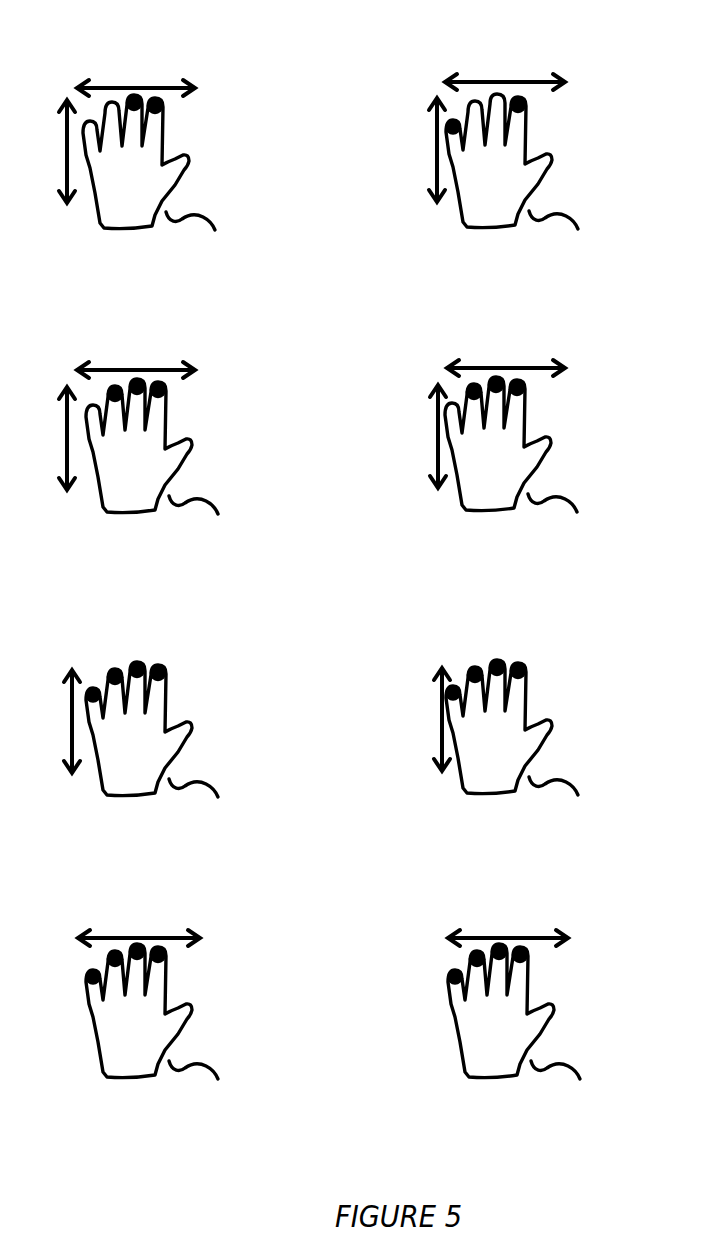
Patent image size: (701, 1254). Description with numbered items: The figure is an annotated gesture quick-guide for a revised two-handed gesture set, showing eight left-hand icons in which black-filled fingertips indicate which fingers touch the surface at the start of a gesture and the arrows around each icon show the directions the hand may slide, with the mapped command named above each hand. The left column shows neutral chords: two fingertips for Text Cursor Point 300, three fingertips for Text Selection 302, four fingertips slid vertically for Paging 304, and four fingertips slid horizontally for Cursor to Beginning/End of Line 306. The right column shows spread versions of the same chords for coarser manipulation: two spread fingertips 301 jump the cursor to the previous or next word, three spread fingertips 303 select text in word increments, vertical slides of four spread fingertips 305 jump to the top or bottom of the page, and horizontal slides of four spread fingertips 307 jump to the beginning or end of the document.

The Text Cursor Point gesture 300 is at (137, 137).
The spread two-fingertip word point gesture 301 is at (503, 135).
The Text Selection gesture 302 is at (138, 423).
The spread three-fingertip word select gesture 303 is at (503, 422).
The Paging gesture 304 is at (141, 707).
The spread four-fingertip top/bottom page gesture 305 is at (508, 706).
The Cursor to Beginning/End of Line gesture 306 is at (140, 990).
The spread four-fingertip begin/end document gesture 307 is at (509, 990).